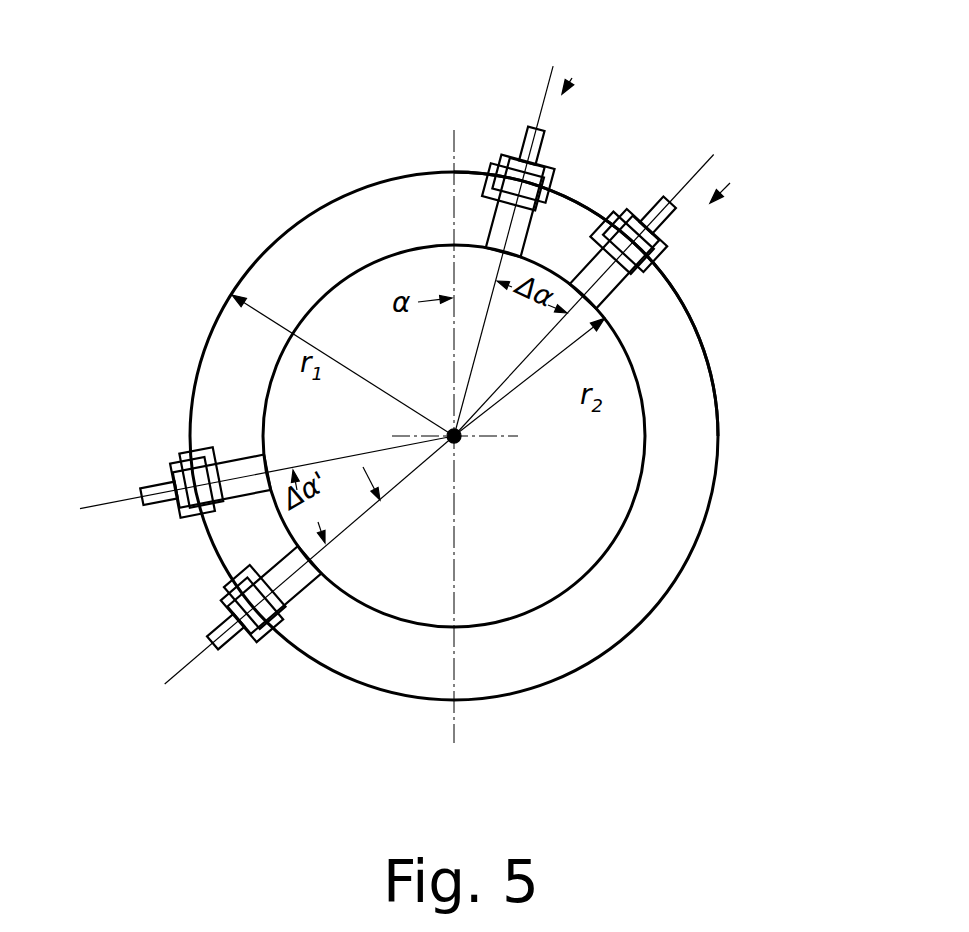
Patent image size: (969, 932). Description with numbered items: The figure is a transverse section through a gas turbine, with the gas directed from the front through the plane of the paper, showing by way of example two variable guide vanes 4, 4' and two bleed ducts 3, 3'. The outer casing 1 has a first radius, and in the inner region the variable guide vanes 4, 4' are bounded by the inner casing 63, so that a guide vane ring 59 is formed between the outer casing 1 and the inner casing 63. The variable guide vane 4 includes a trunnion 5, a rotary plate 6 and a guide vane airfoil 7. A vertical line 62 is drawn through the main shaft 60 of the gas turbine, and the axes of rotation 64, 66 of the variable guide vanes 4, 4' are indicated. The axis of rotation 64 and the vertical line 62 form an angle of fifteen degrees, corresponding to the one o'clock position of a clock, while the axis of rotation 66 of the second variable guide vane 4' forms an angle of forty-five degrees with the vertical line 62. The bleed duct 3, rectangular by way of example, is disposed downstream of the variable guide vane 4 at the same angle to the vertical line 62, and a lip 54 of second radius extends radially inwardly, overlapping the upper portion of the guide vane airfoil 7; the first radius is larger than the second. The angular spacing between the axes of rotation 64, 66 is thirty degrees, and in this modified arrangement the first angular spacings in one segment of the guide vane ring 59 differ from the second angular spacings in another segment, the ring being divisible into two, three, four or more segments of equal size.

The outer casing 1 is at (708, 506).
The bleed duct 3 is at (421, 358).
The second bleed duct 3' is at (654, 247).
The variable guide vane 4 is at (584, 47).
The second variable guide vane 4' is at (750, 172).
The trunnion 5 is at (546, 130).
The rotary plate 6 is at (500, 153).
The guide vane airfoil 7 is at (514, 218).
The lip 54 is at (492, 200).
The guide vane ring 59 is at (676, 380).
The main shaft 60 is at (460, 445).
The vertical line 62 is at (452, 722).
The inner casing 63 is at (647, 444).
The axis of rotation 64 is at (547, 87).
The axis of rotation 66 is at (712, 160).